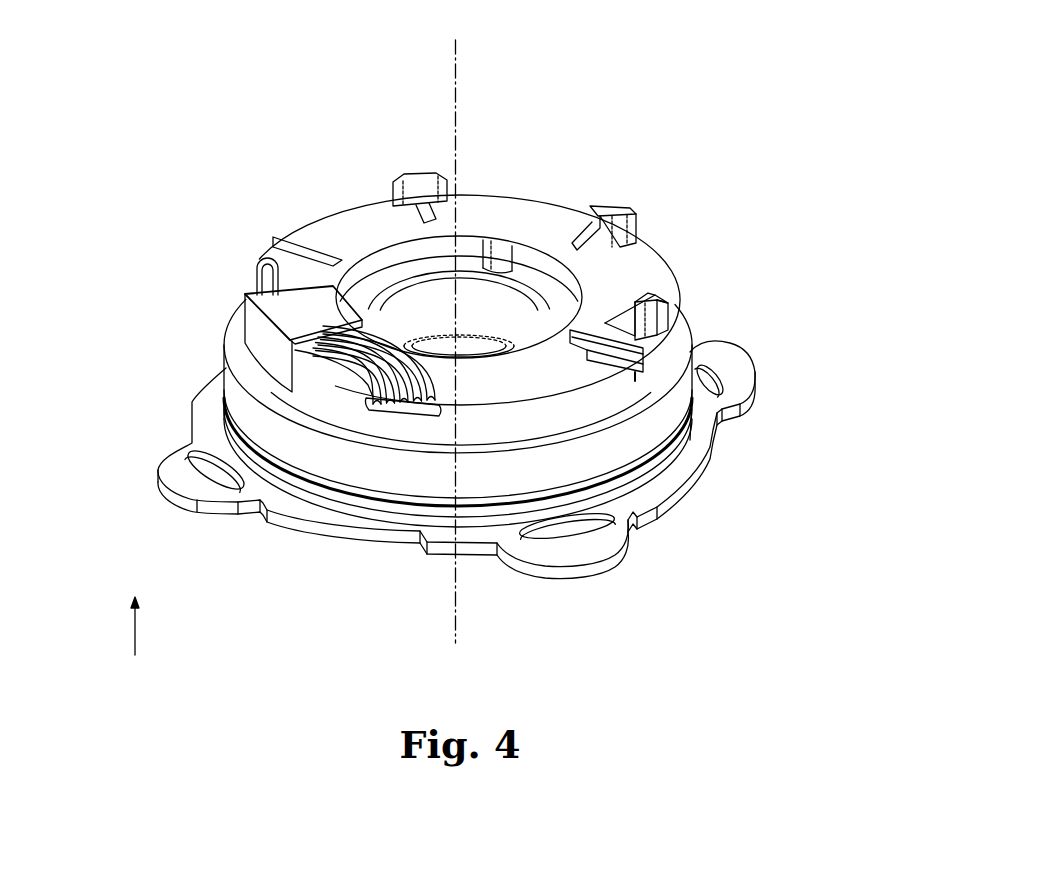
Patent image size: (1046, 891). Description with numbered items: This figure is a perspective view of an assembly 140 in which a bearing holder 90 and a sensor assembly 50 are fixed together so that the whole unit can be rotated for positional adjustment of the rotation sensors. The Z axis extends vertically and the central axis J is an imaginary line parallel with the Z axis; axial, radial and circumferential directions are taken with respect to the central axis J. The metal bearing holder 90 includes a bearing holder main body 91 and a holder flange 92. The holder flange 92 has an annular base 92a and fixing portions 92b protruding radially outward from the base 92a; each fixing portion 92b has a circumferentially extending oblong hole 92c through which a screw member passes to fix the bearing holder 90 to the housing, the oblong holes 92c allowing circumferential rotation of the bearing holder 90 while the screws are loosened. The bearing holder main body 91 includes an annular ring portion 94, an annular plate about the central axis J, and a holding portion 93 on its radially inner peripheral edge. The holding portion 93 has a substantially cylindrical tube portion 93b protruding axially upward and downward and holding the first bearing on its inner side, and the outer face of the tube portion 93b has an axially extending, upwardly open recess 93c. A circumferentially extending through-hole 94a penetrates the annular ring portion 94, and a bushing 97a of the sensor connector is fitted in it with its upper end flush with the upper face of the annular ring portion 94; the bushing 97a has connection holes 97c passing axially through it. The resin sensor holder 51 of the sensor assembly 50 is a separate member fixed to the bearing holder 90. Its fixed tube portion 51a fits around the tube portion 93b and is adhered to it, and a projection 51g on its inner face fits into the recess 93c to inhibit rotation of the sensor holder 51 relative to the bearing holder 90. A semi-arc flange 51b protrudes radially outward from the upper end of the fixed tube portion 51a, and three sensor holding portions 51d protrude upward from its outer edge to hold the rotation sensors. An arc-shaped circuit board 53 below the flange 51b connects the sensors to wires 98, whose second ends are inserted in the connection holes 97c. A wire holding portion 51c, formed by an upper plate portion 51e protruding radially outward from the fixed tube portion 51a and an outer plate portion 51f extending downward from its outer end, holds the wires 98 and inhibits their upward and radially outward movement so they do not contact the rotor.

The assembly 140 is at (695, 78).
The sensor assembly 50 is at (645, 203).
The sensor holder 51 is at (466, 190).
The fixed tube portion 51a is at (332, 262).
The flange 51b is at (378, 215).
The wire holding portion 51c is at (157, 267).
The sensor holding portion 51d is at (418, 180).
The upper plate portion 51e is at (278, 307).
The outer plate portion 51f is at (260, 344).
The projection 51g is at (524, 280).
The circuit board 53 is at (650, 381).
The bearing holder 90 is at (798, 243).
The bearing holder main body 91 is at (688, 321).
The holder flange 92 is at (720, 336).
The base 92a is at (708, 427).
The fixing portion 92b is at (180, 464).
The oblong hole 92c is at (218, 478).
The holding portion 93 is at (549, 275).
The tube portion 93b is at (527, 278).
The recess 93c is at (500, 262).
The annular ring portion 94 is at (480, 427).
The through-hole 94a is at (414, 413).
The bushing 97a is at (364, 412).
The connection holes 97c is at (443, 413).
The wires 98 is at (286, 278).
The central axis J is at (453, 63).
The Z axis Z is at (135, 610).